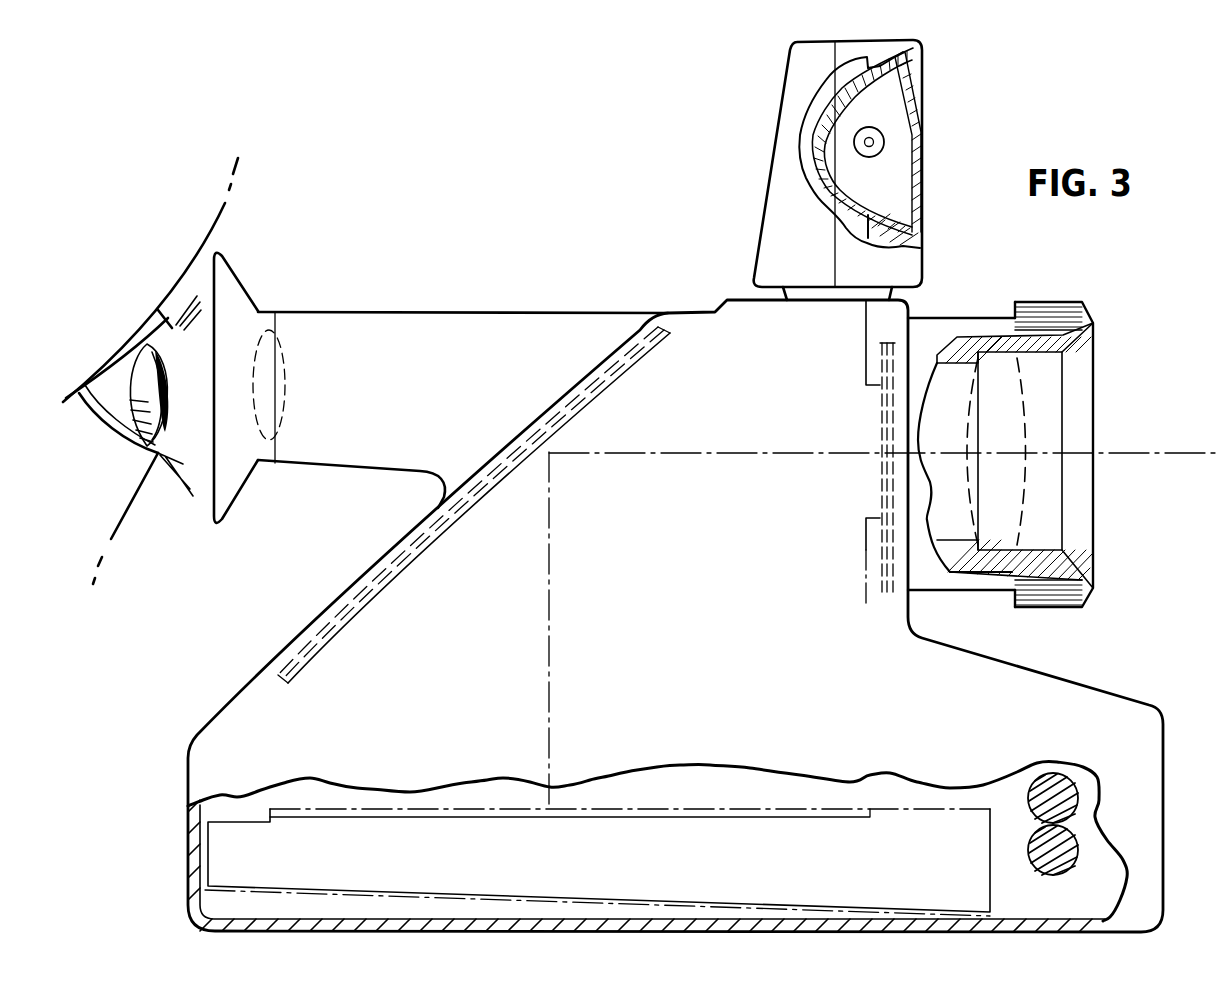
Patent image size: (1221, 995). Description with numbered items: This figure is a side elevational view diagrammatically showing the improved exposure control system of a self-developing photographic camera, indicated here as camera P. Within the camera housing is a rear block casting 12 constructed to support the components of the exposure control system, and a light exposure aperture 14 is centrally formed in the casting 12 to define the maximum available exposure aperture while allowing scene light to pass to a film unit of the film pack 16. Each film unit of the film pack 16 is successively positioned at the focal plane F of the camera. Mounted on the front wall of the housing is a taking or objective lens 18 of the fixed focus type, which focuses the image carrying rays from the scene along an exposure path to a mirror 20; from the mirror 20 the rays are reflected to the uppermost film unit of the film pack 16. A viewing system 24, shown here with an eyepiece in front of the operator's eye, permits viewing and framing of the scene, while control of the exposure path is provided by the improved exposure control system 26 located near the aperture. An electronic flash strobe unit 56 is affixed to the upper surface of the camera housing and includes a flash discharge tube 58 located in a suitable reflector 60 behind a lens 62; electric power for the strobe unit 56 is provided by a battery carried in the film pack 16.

The rear block casting 12 is at (866, 348).
The light exposure aperture 14 is at (872, 518).
The film pack 16 is at (242, 820).
The taking or objective lens 18 is at (1027, 415).
The mirror 20 is at (628, 374).
The viewing system 24 is at (424, 326).
The exposure control system 26 is at (830, 424).
The electronic flash strobe unit 56 is at (851, 170).
The flash discharge tube 58 is at (884, 153).
The reflector 60 is at (860, 97).
The lens 62 is at (922, 62).
The focal plane F is at (598, 803).
The photographic camera P is at (580, 231).